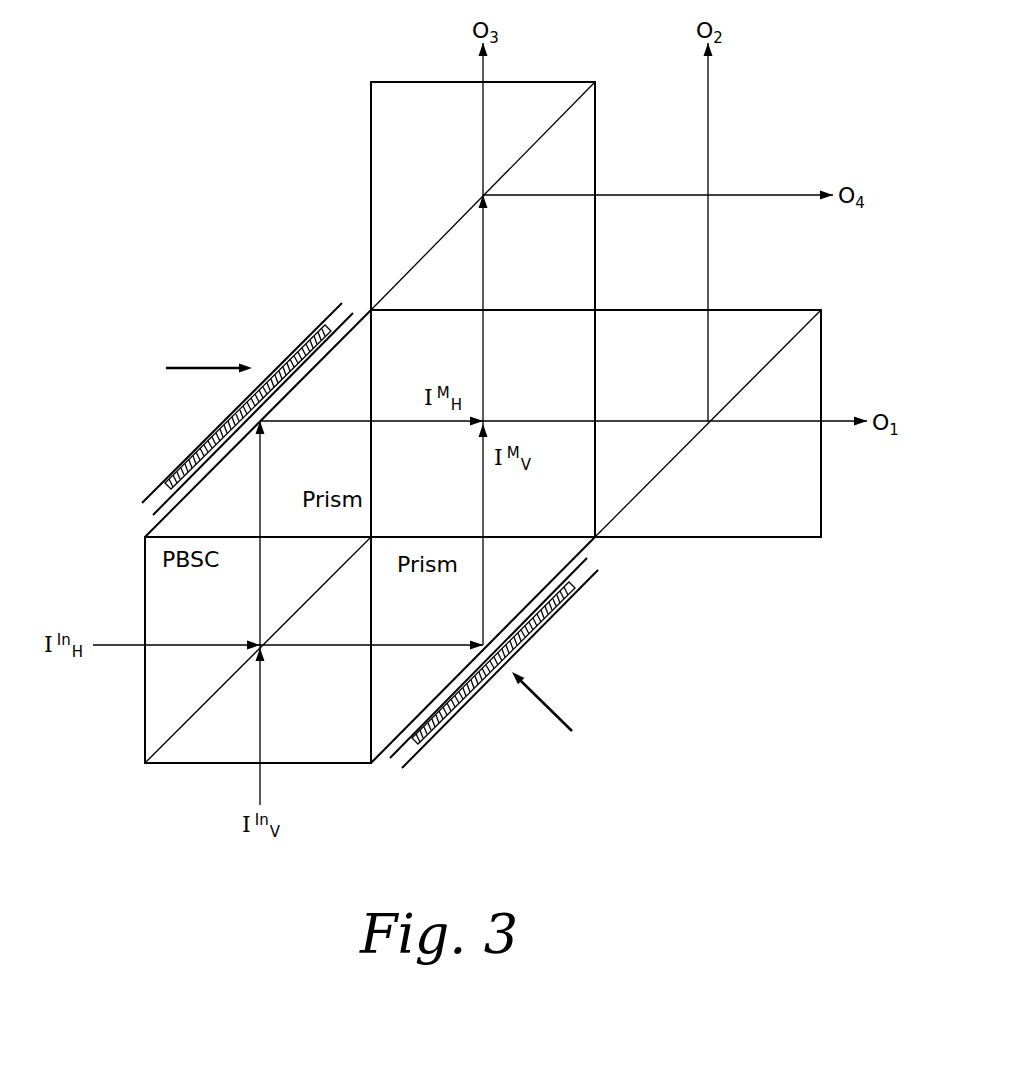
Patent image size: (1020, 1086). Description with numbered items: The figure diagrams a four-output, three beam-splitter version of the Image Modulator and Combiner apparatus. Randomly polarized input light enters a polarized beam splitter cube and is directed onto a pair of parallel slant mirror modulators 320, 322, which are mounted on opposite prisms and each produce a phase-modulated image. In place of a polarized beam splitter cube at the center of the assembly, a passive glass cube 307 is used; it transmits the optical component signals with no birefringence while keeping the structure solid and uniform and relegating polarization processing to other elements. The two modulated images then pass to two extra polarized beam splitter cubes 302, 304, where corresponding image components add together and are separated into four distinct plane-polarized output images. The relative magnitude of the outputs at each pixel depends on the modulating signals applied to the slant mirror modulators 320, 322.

The polarized beam splitter cube 302 is at (748, 538).
The polarized beam splitter cube 304 is at (557, 82).
The glass cube 307 is at (554, 374).
The slant mirror modulator 320 is at (453, 757).
The slant mirror modulator 322 is at (136, 447).